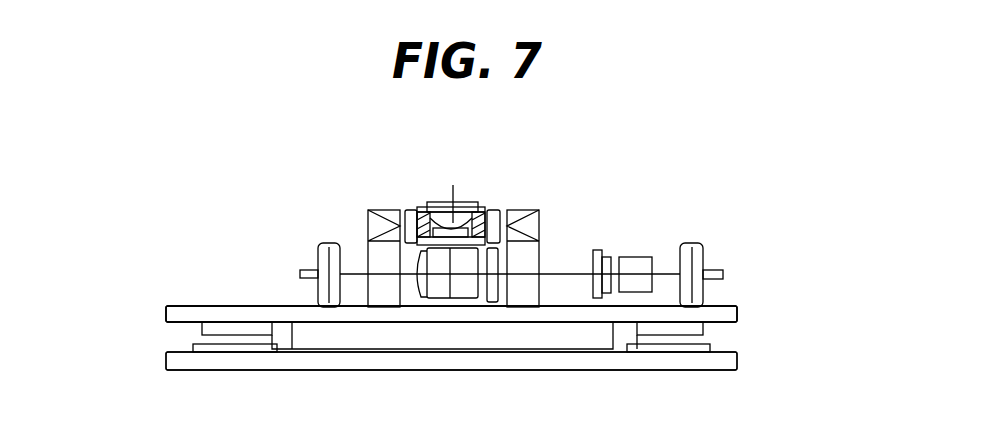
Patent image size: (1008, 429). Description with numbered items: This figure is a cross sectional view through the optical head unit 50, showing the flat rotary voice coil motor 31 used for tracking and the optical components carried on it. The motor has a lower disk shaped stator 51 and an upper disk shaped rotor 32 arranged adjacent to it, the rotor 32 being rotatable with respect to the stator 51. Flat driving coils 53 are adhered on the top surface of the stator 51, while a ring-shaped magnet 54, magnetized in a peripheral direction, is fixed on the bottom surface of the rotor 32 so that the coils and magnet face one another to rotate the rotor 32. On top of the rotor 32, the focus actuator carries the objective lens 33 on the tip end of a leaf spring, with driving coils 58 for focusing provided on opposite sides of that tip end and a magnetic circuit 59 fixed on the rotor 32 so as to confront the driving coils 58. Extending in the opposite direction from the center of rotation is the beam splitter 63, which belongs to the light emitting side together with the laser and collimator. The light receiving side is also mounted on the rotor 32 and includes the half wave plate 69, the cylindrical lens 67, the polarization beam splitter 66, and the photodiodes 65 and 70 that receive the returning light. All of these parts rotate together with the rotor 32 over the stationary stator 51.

The optical head unit 50 is at (688, 117).
The rotary voice coil motor 31 is at (731, 341).
The rotor 32 is at (740, 312).
The stator 51 is at (727, 371).
The driving coils 53 is at (687, 353).
The ring-shaped magnet 54 is at (660, 330).
The photodiode 70 is at (322, 243).
The photodiode 65 is at (698, 243).
The magnetic circuit 59 is at (377, 210).
The driving coils for focusing 58 is at (408, 210).
The objective lens 33 is at (457, 217).
The beam splitter 63 is at (472, 290).
The ½ wave plate 69 is at (498, 258).
The cylindrical lens 67 is at (597, 250).
The polarization beam splitter 66 is at (637, 257).